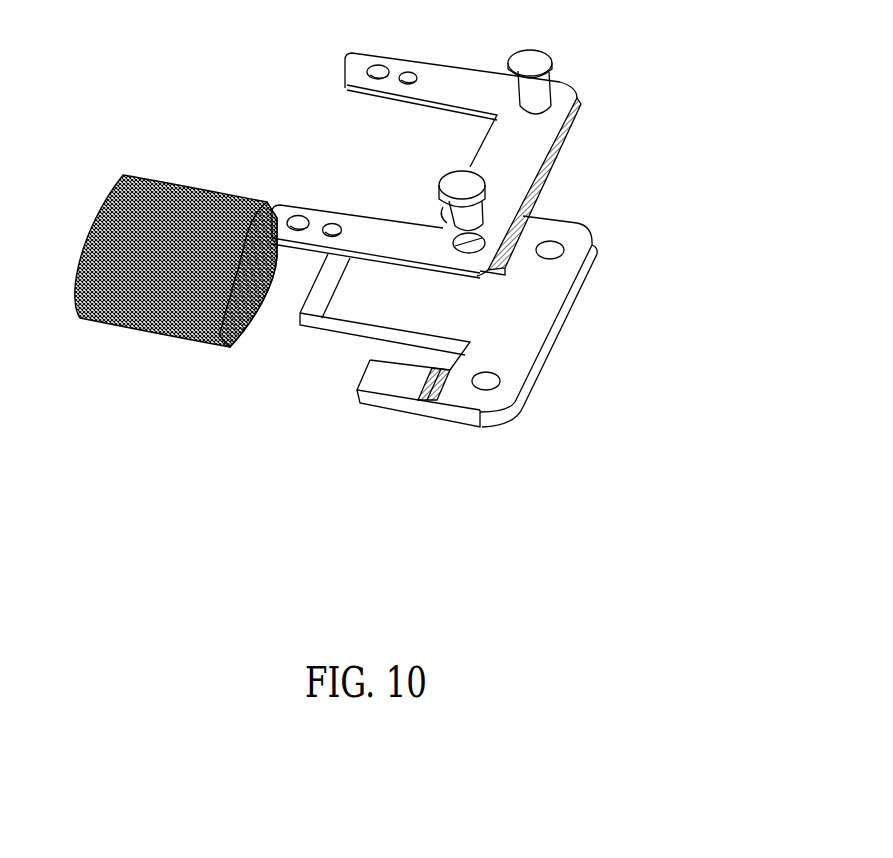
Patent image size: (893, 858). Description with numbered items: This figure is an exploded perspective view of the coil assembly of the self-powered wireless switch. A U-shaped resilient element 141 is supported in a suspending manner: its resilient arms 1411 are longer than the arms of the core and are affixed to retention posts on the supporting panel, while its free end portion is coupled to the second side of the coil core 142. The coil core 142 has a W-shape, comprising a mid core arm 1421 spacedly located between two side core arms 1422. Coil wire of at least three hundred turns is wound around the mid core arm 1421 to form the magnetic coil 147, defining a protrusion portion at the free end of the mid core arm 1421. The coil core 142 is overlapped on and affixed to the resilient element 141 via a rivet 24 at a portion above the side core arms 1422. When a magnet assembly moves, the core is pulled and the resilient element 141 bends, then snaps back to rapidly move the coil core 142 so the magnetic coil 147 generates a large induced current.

The rivet 24 is at (462, 185).
The resilient element 141 is at (510, 179).
The resilient arms 1411 is at (347, 82).
The coil core 142 is at (497, 323).
The mid core arm 1421 is at (350, 307).
The side core arms 1422 is at (385, 386).
The magnetic coil 147 is at (115, 322).